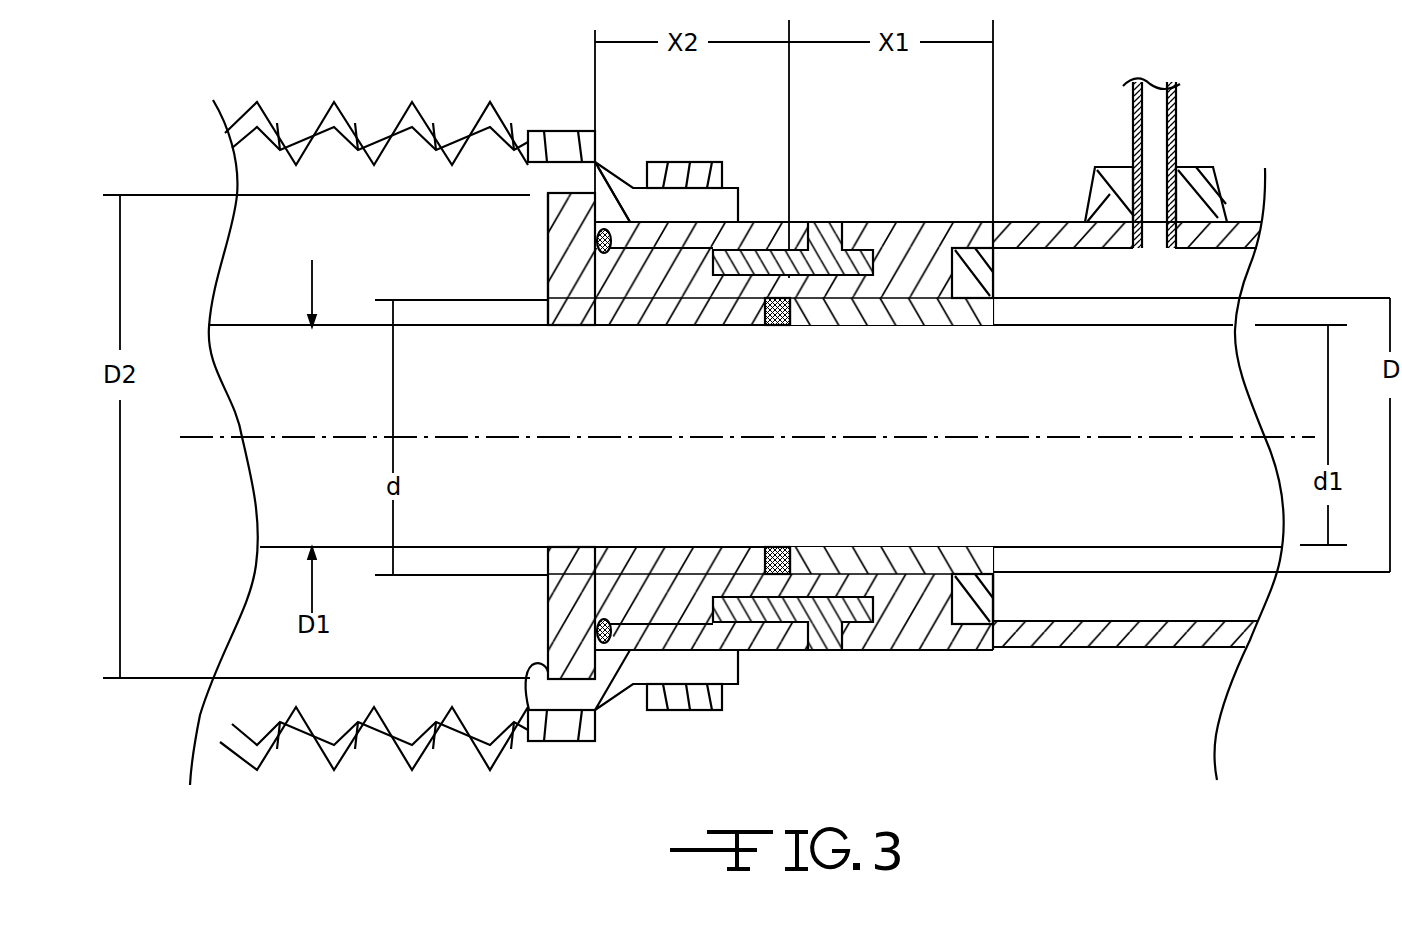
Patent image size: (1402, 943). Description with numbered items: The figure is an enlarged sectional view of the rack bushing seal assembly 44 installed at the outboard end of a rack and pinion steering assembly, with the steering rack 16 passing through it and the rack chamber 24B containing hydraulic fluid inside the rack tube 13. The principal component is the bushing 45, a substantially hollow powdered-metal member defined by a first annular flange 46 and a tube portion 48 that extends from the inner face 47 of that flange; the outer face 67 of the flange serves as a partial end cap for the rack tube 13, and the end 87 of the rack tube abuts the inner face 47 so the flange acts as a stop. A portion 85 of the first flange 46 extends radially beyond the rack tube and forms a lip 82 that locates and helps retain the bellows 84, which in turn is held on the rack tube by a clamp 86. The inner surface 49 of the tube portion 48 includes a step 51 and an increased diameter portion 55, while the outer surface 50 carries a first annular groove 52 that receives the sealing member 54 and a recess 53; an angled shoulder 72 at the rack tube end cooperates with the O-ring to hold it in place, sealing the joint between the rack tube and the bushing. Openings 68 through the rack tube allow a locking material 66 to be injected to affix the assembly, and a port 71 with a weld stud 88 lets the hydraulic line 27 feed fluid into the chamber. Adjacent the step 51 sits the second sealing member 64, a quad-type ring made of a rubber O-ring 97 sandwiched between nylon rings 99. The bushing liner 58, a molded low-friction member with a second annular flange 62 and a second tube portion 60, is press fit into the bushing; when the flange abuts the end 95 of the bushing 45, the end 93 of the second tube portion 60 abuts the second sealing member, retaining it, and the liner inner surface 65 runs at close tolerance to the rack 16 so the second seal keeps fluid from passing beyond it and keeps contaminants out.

The rack tube 13 is at (1262, 195).
The rack 16 is at (1212, 410).
The rack chamber 24B is at (1113, 590).
The hydraulic line 27 is at (1176, 124).
The rack bushing seal assembly 44 is at (882, 150).
The bushing 45 is at (544, 582).
The first annular flange 46 is at (553, 195).
The inner face 47 is at (598, 665).
The tube portion 48 is at (622, 557).
The inner surface 49 is at (700, 548).
The outer surface 50 is at (722, 650).
The step 51 is at (668, 307).
The first annular groove 52 is at (598, 244).
The recess 53 is at (757, 262).
The sealing member 54 is at (597, 242).
The increased diameter portion 55 is at (757, 313).
The bushing liner 58 is at (993, 600).
The second tube portion 60 is at (873, 315).
The second annular flange 62 is at (977, 263).
The second sealing member 64 is at (783, 548).
The inner surface 65 is at (985, 318).
The locking material 66 is at (822, 250).
The outer face 67 is at (547, 250).
The openings 68 is at (843, 235).
The port 71 is at (1198, 195).
The angled shoulder 72 is at (612, 242).
The lip 82 is at (536, 742).
The bellows 84 is at (428, 747).
The portion of the first flange 85 is at (534, 211).
The clamp 86 is at (713, 176).
The end of the rack tube 87 is at (683, 185).
The weld stud 88 is at (1087, 200).
The end of the second tube portion 93 is at (788, 310).
The end of the bushing 95 is at (955, 600).
The rubber O-ring 97 is at (780, 326).
The nylon rings 99 is at (773, 323).